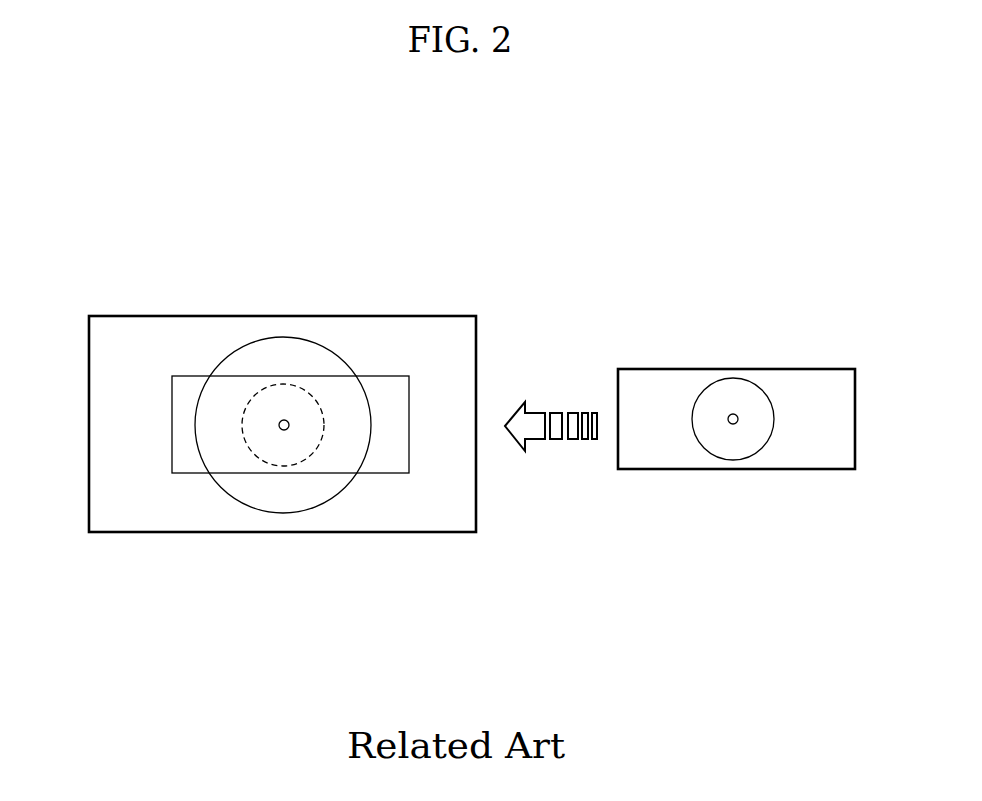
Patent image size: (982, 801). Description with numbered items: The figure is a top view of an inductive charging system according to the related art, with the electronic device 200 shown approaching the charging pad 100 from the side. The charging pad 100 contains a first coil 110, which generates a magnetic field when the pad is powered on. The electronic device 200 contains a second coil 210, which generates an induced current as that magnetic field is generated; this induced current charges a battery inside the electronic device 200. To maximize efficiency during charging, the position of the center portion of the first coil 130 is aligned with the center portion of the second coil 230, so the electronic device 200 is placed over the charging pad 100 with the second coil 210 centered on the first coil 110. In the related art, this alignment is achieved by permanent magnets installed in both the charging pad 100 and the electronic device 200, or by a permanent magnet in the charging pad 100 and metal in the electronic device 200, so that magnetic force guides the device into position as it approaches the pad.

The charging pad 100 is at (406, 327).
The first coil 110 is at (305, 503).
The center portion of the first coil 130 is at (284, 430).
The electronic device 200 is at (191, 383).
The second coil 210 is at (738, 452).
The center portion of the second coil 230 is at (733, 414).